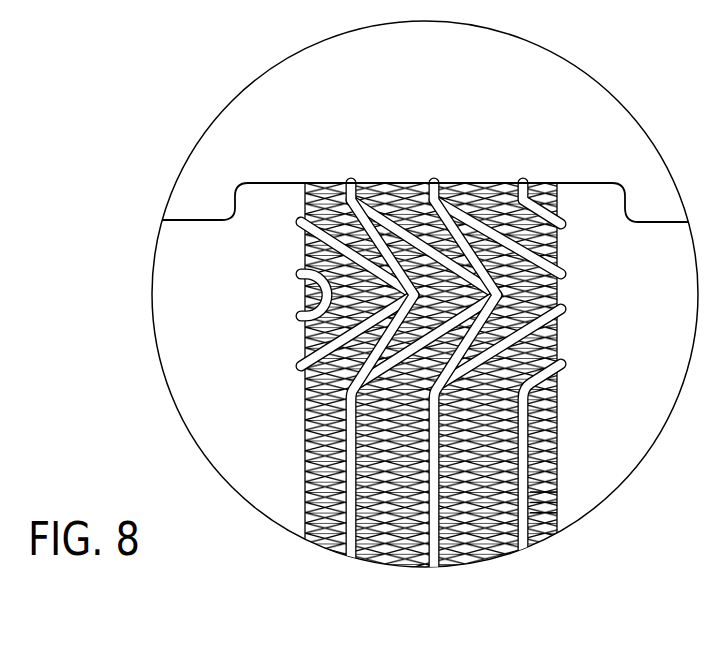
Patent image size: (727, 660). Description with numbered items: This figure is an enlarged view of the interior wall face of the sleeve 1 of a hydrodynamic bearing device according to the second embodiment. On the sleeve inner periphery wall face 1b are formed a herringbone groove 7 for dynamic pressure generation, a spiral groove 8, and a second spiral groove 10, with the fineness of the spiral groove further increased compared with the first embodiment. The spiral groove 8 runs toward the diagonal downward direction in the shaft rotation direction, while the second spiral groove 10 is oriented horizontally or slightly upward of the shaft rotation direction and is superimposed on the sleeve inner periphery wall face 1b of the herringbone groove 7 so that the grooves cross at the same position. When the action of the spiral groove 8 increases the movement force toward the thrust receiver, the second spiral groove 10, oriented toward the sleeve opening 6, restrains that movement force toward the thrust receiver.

The sleeve 1 is at (608, 198).
The sleeve inner periphery wall face 1b is at (322, 494).
The sleeve opening 6 is at (557, 183).
The herringbone groove 7 is at (465, 222).
The spiral groove 8 is at (548, 447).
The second spiral groove 10 is at (542, 498).